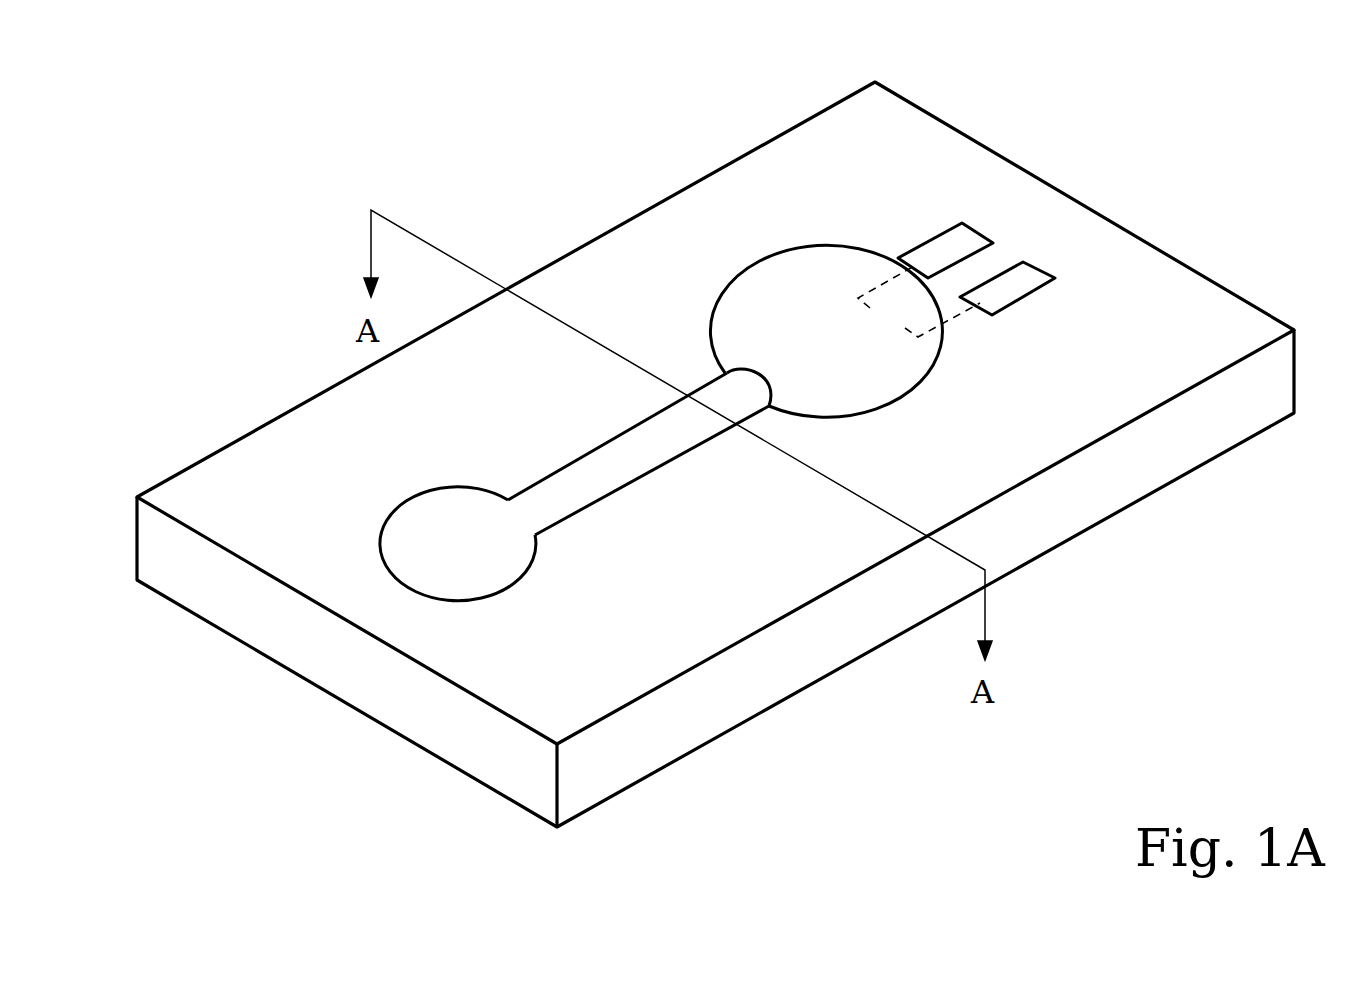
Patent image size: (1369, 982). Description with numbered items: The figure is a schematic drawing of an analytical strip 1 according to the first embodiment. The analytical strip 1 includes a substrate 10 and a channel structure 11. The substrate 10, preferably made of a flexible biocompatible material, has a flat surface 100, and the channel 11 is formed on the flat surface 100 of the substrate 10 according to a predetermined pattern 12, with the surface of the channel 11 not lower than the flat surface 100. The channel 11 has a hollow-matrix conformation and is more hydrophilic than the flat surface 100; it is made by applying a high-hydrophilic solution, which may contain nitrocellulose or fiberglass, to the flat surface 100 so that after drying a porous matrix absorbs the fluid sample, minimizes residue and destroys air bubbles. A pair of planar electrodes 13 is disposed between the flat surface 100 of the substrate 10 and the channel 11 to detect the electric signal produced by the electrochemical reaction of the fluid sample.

The analytical strip 1 is at (178, 158).
The substrate 10 is at (497, 768).
The channel structure 11 is at (583, 512).
The predetermined pattern 12 is at (360, 562).
The planar electrodes 13 is at (1010, 285).
The flat surface 100 is at (1220, 323).